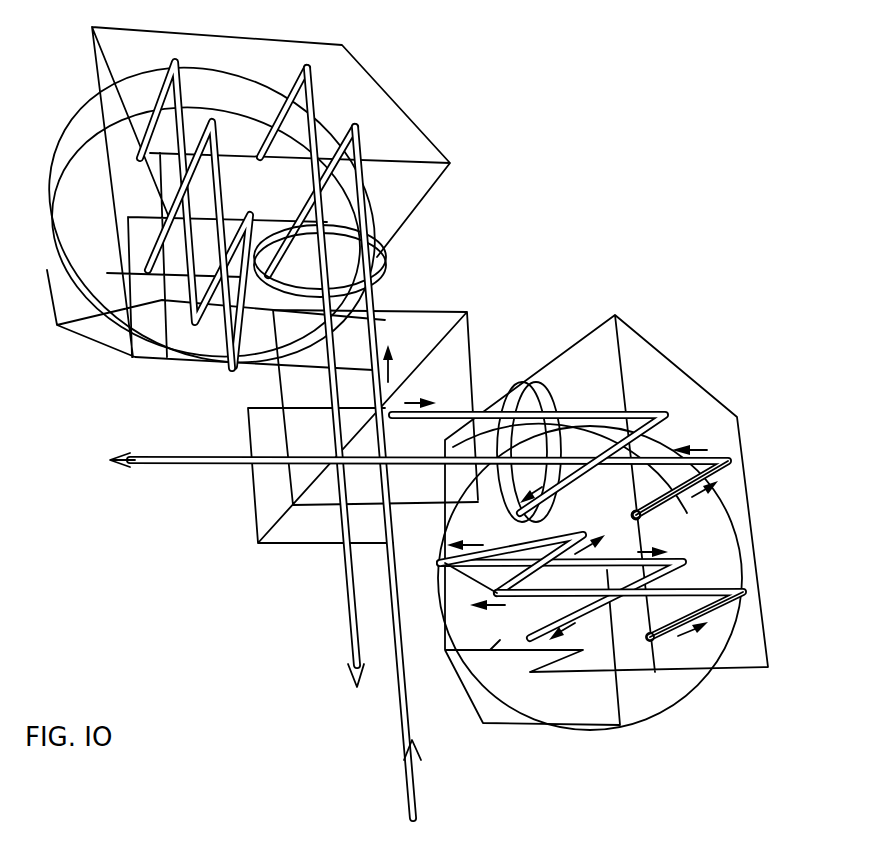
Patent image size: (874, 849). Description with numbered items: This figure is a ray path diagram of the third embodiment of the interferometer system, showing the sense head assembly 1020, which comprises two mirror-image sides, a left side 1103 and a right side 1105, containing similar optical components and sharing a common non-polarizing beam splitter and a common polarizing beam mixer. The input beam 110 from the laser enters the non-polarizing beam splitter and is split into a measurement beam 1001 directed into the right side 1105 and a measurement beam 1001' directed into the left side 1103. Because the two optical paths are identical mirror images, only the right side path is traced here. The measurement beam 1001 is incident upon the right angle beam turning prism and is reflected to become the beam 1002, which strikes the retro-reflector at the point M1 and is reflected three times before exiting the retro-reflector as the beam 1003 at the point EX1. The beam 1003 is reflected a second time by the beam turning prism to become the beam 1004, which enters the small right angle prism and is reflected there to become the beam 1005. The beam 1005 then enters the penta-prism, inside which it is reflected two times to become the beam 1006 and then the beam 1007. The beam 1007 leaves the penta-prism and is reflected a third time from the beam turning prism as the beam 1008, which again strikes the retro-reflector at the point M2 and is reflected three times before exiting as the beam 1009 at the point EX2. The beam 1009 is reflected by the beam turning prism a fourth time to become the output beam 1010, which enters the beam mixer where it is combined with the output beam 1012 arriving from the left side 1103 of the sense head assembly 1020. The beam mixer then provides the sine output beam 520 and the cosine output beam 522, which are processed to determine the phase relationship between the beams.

The left side 1103 is at (434, 95).
The sense head assembly 1020 is at (660, 183).
The right side 1105 is at (699, 317).
The measurement beam 1001' is at (382, 270).
The measurement beam 1001 is at (409, 426).
The beam 1002 is at (672, 420).
The output beam 1010 is at (703, 457).
The beam 1009 is at (703, 511).
The exit point EX2 is at (695, 515).
The strike point M1 is at (565, 517).
The beam 1007 is at (690, 556).
The beam 1004 is at (700, 585).
The beam 1003 is at (730, 594).
The exit point EX1 is at (673, 673).
The beam 1008 is at (620, 725).
The strike point M2 is at (490, 650).
The output beam 1012 is at (325, 395).
The beam 1006 is at (452, 550).
The beam 1005 is at (470, 588).
The sine output beam 520 is at (200, 463).
The cosine output beam 522 is at (340, 643).
The input beam 110 is at (407, 720).